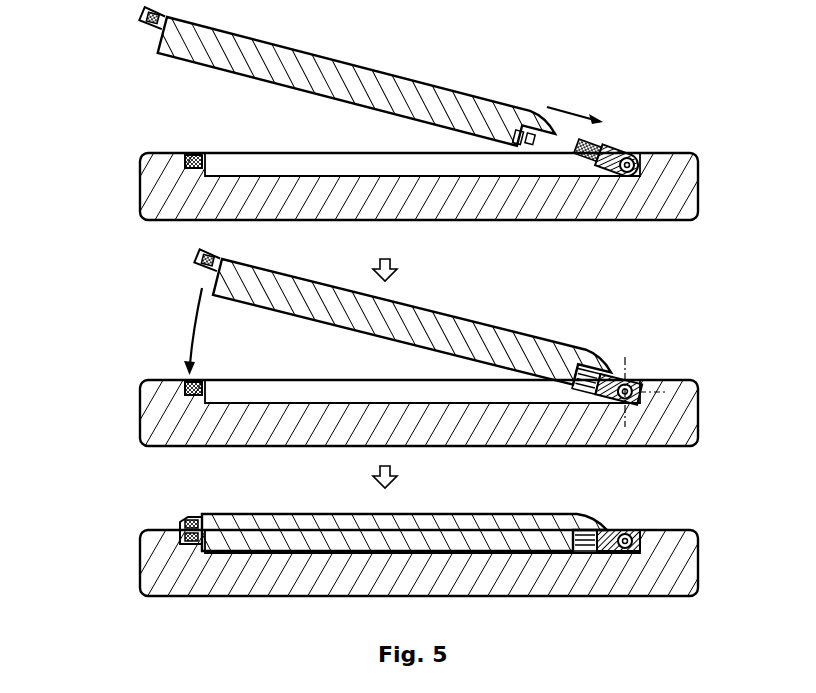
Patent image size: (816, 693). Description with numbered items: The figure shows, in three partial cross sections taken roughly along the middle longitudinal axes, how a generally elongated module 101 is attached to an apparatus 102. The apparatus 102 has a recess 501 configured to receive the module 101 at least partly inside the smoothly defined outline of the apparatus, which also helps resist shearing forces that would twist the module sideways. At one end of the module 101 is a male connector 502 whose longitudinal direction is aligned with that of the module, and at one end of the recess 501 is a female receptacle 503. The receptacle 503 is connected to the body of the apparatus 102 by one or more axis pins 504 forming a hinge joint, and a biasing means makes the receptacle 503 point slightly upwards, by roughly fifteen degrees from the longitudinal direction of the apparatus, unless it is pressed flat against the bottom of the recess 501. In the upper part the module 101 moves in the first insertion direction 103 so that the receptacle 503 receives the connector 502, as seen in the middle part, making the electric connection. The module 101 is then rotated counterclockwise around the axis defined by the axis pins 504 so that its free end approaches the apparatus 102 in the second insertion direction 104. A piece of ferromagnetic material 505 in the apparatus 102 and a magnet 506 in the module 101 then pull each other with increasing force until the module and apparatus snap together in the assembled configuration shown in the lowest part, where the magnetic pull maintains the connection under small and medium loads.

The module 101 is at (322, 63).
The apparatus 102 is at (140, 214).
The first insertion direction 103 is at (588, 118).
The second insertion direction 104 is at (192, 328).
The recess 501 is at (262, 163).
The male connector 502 is at (525, 128).
The female receptacle 503 is at (602, 147).
The axis pins 504 is at (631, 152).
The piece of ferromagnetic material 505 is at (190, 388).
The magnet 506 is at (197, 264).